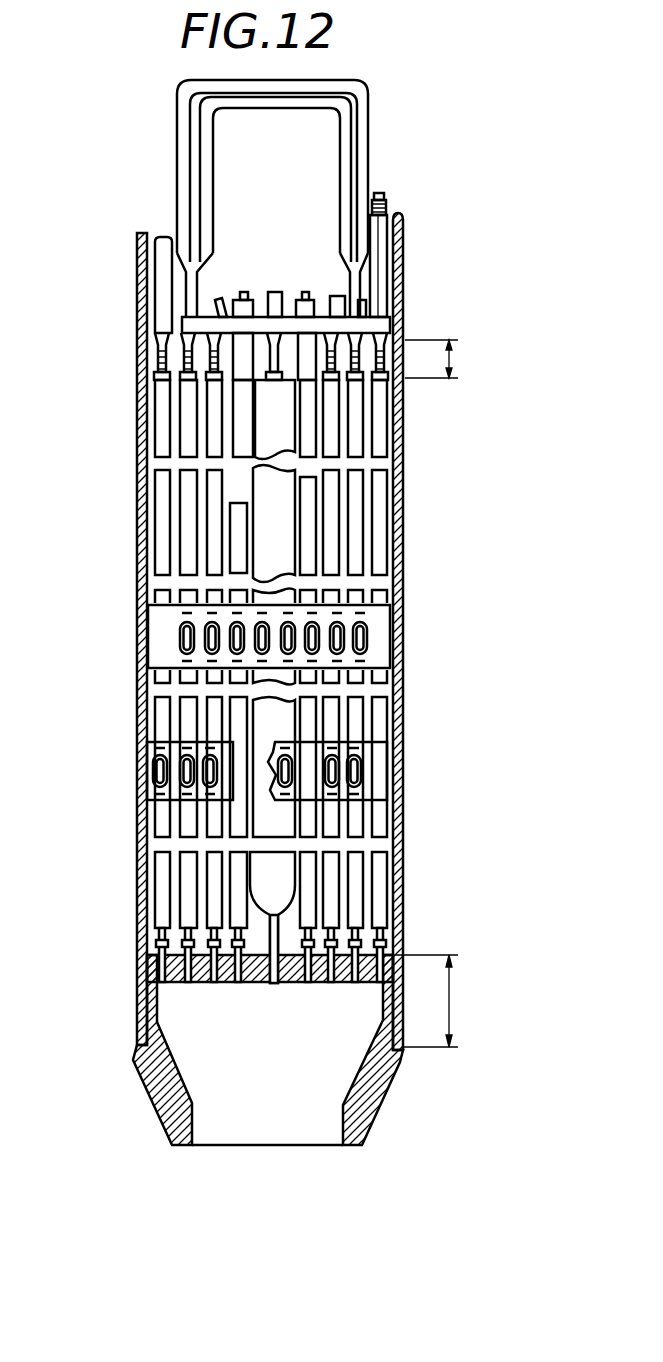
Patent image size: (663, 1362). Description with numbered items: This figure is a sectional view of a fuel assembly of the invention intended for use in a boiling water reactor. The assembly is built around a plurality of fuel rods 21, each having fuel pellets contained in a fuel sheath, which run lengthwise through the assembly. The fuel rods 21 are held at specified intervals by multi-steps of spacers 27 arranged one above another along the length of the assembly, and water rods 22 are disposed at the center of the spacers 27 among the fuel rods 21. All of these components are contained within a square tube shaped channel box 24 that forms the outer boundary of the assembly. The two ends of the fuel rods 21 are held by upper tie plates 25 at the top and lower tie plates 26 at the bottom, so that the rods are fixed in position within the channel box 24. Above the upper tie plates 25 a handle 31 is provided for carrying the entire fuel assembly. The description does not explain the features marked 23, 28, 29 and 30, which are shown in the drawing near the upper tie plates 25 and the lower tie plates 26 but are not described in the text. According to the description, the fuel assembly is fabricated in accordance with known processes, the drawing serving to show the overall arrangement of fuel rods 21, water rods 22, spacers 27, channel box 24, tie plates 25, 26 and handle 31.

The fuel rods 21 is at (390, 572).
The water rods 22 is at (310, 432).
The upper tie plate 23 is at (294, 300).
The channel box 24 is at (405, 305).
The upper tie plates 25 is at (185, 328).
The lower tie plates 26 is at (168, 985).
The spacers 27 is at (153, 645).
The lower tie plate height 28 is at (452, 1000).
The upper plenum spring length 29 is at (458, 355).
The finger spring 30 is at (221, 300).
The handle 31 is at (372, 122).